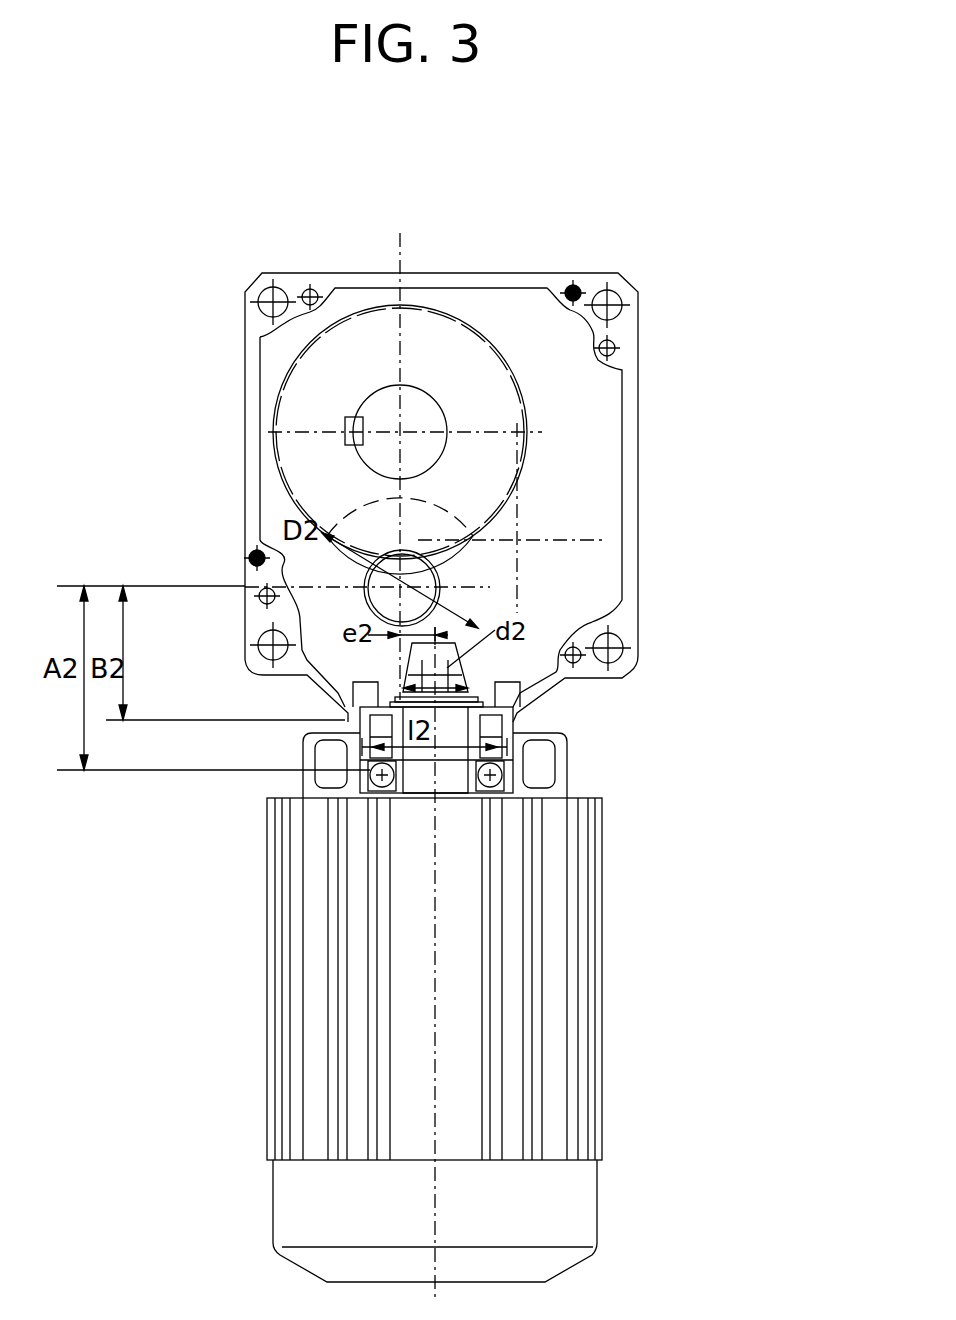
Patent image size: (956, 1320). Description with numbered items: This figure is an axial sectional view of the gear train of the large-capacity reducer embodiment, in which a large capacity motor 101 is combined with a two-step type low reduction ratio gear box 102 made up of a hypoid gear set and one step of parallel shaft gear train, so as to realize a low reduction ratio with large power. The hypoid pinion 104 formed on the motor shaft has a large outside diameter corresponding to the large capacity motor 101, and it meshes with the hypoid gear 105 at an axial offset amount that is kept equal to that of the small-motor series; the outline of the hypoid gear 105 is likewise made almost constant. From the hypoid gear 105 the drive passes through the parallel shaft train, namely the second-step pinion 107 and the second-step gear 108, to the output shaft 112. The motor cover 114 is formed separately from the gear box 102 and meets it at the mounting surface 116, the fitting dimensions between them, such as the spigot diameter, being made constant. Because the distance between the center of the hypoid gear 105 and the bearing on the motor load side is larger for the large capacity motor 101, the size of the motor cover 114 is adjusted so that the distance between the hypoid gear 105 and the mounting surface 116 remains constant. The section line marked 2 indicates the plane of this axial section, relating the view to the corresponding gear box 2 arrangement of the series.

The gear box 2 is at (400, 233).
The large capacity motor 101 is at (597, 1025).
The two-step type low reduction ratio gear box 102 is at (522, 283).
The hypoid pinion 104 is at (520, 715).
The hypoid gear 105 is at (477, 612).
The second-step pinion 107 is at (483, 567).
The second-step gear 108 is at (485, 492).
The output shaft 112 is at (430, 420).
The motor cover 114 is at (305, 740).
The mounting surface 116 is at (342, 707).